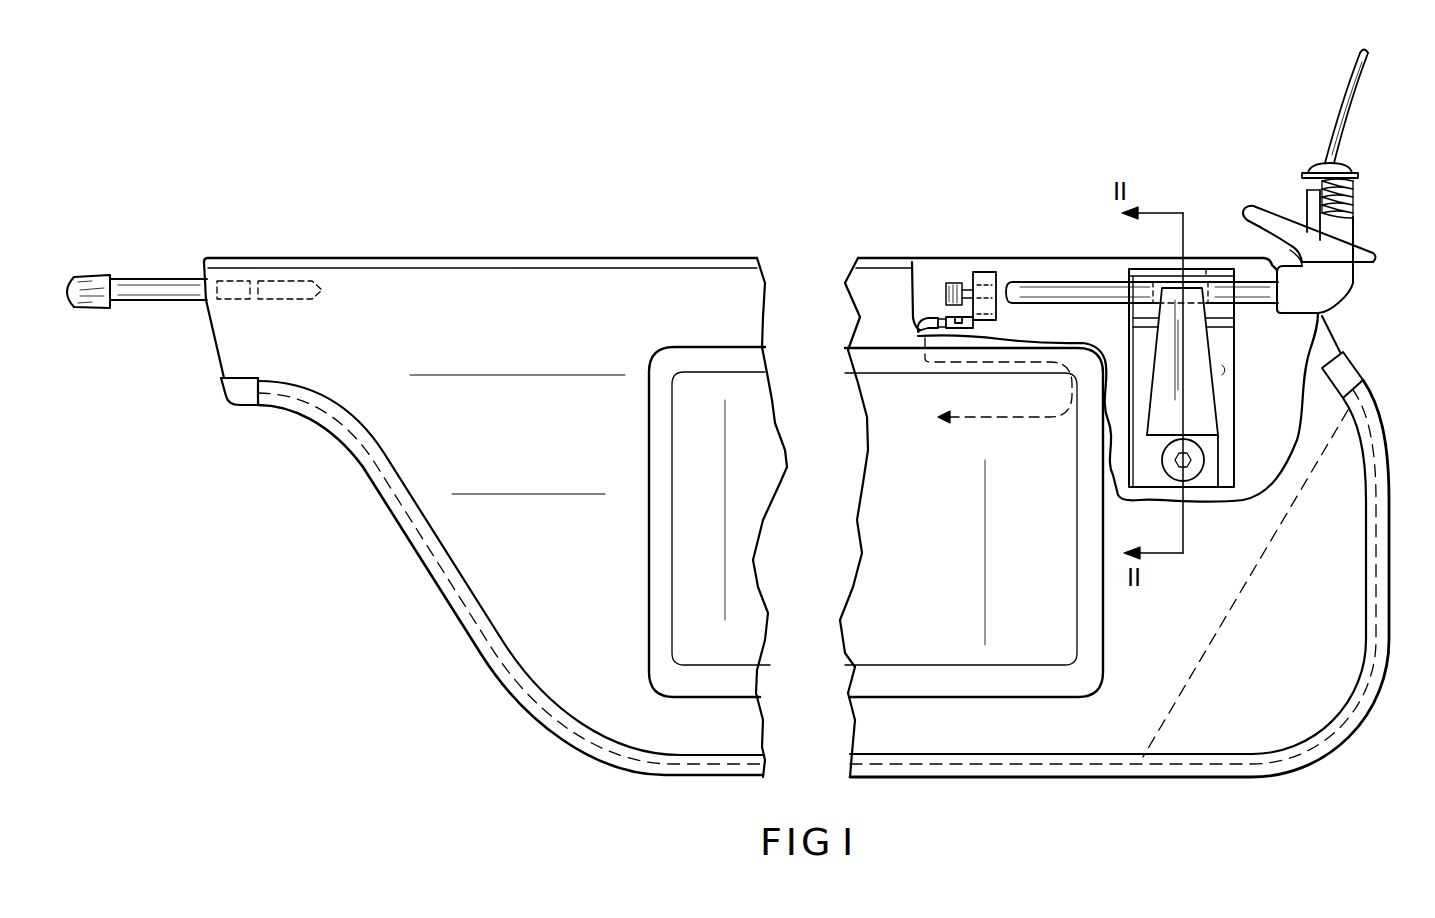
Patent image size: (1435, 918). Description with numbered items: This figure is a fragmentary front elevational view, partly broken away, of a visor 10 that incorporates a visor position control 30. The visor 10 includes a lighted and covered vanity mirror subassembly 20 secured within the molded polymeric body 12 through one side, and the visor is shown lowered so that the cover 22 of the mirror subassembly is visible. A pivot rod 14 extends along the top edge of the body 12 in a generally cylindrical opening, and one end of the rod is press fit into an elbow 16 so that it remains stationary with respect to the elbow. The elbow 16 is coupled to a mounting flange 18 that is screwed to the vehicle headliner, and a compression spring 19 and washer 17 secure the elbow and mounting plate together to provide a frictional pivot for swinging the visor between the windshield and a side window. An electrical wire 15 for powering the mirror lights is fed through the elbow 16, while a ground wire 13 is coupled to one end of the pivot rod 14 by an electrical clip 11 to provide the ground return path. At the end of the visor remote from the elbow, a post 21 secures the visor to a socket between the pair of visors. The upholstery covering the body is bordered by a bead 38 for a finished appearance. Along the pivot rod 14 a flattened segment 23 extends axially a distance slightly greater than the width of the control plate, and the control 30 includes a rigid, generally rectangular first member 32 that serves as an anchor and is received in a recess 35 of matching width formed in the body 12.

The visor 10 is at (608, 253).
The electrical clip 11 is at (985, 272).
The molded polymeric body 12 is at (1043, 330).
The ground wire 13 is at (929, 313).
The pivot rod 14 is at (1058, 285).
The electrical wire 15 is at (1350, 106).
The elbow 16 is at (1337, 292).
The washer 17 is at (1354, 166).
The mounting flange 18 is at (1258, 207).
The compression spring 19 is at (1355, 185).
The vanity mirror subassembly 20 is at (712, 503).
The post 21 is at (160, 278).
The cover 22 is at (1057, 620).
The flattened segment 23 is at (1206, 270).
The visor position control 30 is at (1236, 347).
The first member 32 is at (1225, 407).
The recess 35 is at (1224, 370).
The bead 38 is at (1225, 782).